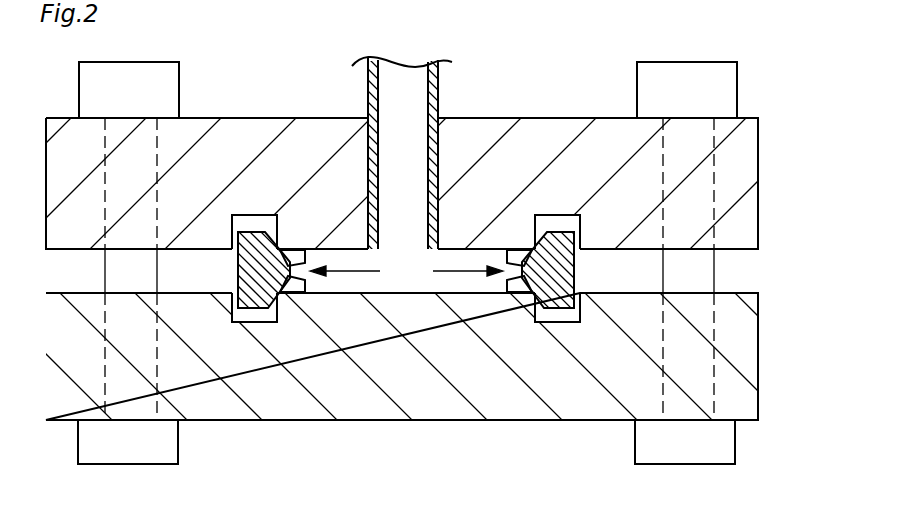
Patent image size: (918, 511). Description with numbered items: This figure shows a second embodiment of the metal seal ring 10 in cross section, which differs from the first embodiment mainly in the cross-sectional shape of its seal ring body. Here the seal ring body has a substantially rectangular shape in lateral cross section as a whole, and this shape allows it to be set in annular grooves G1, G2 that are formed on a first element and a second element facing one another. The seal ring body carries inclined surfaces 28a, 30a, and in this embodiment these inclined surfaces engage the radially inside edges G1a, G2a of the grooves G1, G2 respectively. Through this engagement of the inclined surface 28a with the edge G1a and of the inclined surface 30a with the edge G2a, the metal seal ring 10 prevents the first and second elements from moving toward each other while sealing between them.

The metal seal ring 10 is at (600, 262).
The inclined surface 28a is at (288, 250).
The inclined surface 30a is at (270, 308).
The annular groove G1 is at (237, 224).
The radially inside edge G1a is at (556, 250).
The annular groove G2 is at (238, 313).
The radially inside edge G2a is at (555, 300).